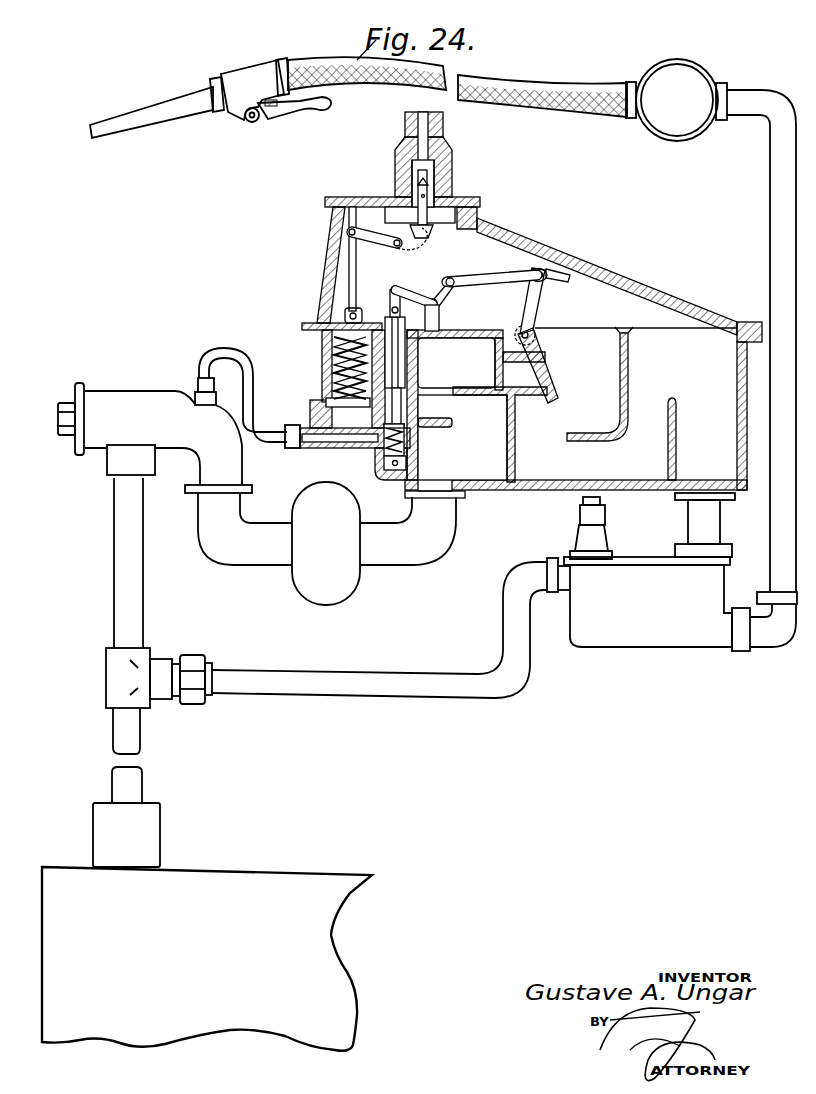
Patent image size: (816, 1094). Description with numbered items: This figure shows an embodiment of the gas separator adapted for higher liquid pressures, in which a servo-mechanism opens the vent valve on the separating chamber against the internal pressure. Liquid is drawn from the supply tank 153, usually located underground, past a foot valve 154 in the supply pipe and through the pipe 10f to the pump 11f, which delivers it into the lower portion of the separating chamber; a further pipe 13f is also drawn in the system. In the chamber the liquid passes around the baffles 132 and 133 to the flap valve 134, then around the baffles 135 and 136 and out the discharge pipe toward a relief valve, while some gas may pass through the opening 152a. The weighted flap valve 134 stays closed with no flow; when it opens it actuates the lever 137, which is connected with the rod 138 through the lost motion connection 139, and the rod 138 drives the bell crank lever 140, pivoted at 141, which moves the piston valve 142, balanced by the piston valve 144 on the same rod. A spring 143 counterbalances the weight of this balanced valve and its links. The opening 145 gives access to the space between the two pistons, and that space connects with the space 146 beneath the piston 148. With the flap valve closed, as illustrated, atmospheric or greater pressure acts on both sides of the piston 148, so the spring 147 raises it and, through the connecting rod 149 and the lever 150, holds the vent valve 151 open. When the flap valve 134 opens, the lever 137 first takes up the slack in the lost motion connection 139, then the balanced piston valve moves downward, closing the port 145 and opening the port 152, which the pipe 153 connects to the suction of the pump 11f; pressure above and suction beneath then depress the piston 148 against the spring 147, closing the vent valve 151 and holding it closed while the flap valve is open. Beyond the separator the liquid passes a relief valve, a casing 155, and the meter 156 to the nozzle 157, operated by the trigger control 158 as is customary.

The pipe 10f is at (120, 561).
The pump 11f is at (326, 543).
The return pipe 13f is at (340, 680).
The baffle 132 is at (452, 423).
The baffle 133 is at (466, 398).
The flap valve 134 is at (552, 379).
The baffle 135 is at (598, 440).
The baffle 136 is at (677, 430).
The lever 137 is at (537, 305).
The rod 138 is at (490, 284).
The lost motion connection 139 is at (545, 268).
The bell crank lever 140 is at (434, 298).
The pivot 141 is at (430, 298).
The piston valve 142 is at (395, 370).
The spring 143 is at (398, 476).
The piston valve 144 is at (405, 440).
The opening 145 is at (412, 400).
The space 146 is at (370, 434).
The spring 147 is at (320, 368).
The piston 148 is at (330, 300).
The connecting rod 149 is at (350, 262).
The lever 150 is at (364, 226).
The vent valve 151 is at (425, 218).
The port 152 is at (386, 440).
The opening 152a is at (455, 330).
The pipe / supply tank 153 is at (222, 352).
The foot valve 154 is at (135, 830).
The pump casing 155 is at (641, 570).
The meter 156 is at (680, 72).
The nozzle 157 is at (130, 114).
The trigger control 158 is at (292, 112).